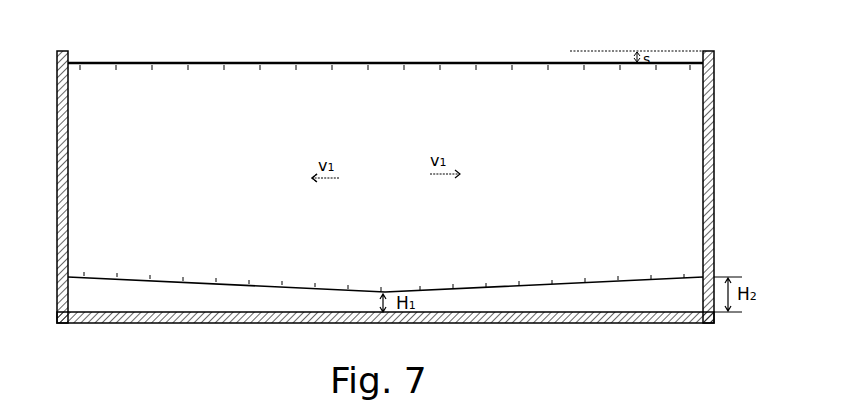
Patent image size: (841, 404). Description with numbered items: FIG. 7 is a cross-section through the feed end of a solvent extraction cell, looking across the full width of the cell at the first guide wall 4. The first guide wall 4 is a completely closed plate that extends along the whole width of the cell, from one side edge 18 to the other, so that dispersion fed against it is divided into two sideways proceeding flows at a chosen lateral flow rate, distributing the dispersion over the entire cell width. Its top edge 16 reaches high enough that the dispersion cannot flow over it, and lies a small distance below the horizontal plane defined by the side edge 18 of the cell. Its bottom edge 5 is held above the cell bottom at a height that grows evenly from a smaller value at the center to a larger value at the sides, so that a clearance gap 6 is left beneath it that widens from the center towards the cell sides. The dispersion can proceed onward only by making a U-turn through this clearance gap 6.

The side edge of the cell 18 is at (63, 50).
The top edge of the first guide wall 16 is at (383, 64).
The first guide wall 4 is at (395, 142).
The bottom edge 5 is at (237, 286).
The clearance gap 6 is at (328, 302).